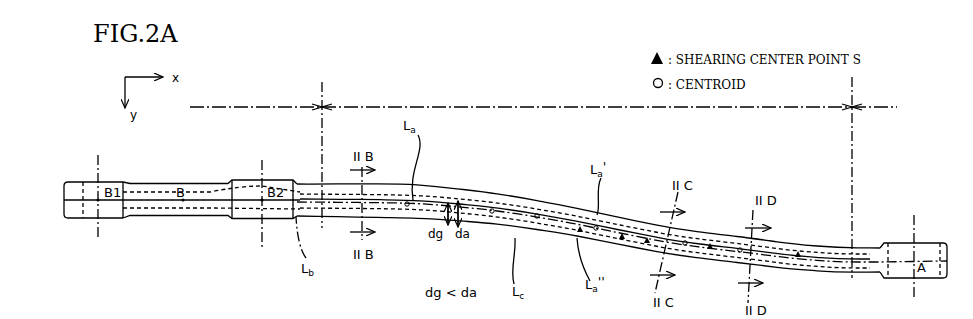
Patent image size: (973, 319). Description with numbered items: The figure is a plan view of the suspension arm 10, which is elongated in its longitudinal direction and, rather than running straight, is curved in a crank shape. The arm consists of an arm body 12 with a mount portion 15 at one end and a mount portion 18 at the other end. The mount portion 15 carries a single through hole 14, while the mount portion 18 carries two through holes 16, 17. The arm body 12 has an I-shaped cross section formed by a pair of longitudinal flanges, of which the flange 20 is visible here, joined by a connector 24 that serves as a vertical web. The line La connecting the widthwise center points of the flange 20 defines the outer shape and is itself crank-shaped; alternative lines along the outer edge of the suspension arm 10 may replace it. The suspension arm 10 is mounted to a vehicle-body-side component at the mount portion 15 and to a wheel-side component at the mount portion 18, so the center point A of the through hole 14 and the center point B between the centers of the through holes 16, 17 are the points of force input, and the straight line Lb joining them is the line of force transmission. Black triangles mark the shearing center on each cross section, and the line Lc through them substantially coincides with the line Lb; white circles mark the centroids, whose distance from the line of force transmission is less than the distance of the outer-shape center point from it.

The suspension arm 10 is at (505, 214).
The arm body 12 is at (587, 155).
The through hole 14 is at (900, 252).
The mount portion 15 is at (874, 177).
The through hole 16 is at (86, 190).
The through hole 17 is at (278, 192).
The mount portion 18 is at (210, 163).
The flange 20 is at (432, 188).
The connector 24 is at (503, 210).